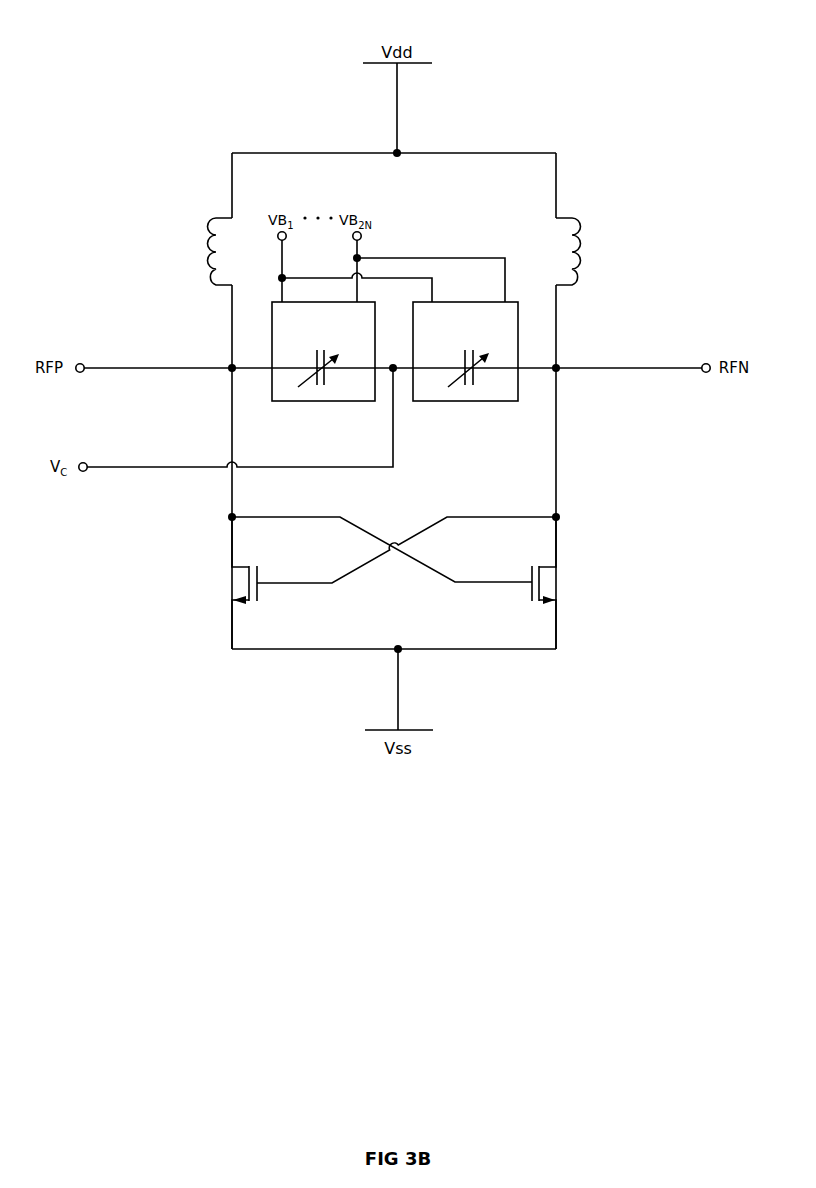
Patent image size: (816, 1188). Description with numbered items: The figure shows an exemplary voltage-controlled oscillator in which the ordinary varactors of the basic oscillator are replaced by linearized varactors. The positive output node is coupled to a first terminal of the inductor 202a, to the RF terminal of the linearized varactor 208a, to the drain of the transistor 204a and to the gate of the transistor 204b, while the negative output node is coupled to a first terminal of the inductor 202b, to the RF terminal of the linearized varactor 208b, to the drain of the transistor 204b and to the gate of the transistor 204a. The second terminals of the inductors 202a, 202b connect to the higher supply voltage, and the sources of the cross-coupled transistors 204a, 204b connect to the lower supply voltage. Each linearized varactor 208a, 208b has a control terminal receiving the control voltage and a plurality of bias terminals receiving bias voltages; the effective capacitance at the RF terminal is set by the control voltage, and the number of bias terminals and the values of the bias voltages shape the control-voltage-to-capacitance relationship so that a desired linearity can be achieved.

The inductor 202a is at (163, 261).
The inductor 202b is at (589, 261).
The transistor 204a is at (200, 592).
The transistor 204b is at (548, 592).
The linearized varactor 208a is at (320, 401).
The linearized varactor 208b is at (467, 401).